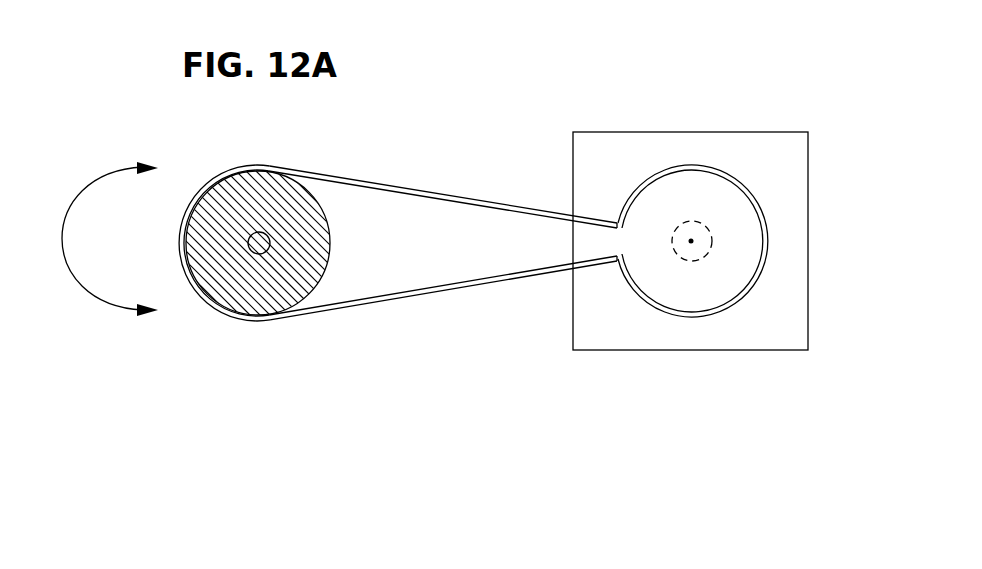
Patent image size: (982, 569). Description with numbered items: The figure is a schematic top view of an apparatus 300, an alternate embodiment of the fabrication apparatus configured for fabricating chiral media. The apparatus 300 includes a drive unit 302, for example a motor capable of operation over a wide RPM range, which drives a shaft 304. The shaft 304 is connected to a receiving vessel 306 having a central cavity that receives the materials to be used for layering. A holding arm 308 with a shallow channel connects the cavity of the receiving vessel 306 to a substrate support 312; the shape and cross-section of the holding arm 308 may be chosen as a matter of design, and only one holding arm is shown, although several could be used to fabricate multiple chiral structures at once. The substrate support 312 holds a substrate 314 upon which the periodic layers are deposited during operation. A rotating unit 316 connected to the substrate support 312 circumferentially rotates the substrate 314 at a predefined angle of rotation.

The apparatus 300 is at (593, 58).
The drive unit 302 is at (572, 332).
The shaft 304 is at (691, 241).
The receiving vessel 306 is at (692, 168).
The holding arm 308 is at (437, 195).
The substrate support 312 is at (230, 310).
The substrate 314 is at (227, 203).
The rotating unit 316 is at (267, 237).